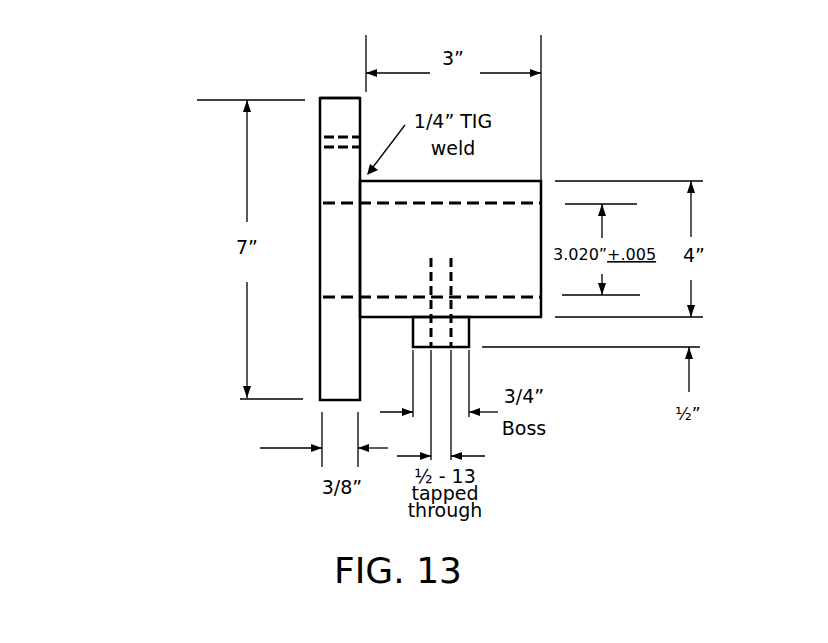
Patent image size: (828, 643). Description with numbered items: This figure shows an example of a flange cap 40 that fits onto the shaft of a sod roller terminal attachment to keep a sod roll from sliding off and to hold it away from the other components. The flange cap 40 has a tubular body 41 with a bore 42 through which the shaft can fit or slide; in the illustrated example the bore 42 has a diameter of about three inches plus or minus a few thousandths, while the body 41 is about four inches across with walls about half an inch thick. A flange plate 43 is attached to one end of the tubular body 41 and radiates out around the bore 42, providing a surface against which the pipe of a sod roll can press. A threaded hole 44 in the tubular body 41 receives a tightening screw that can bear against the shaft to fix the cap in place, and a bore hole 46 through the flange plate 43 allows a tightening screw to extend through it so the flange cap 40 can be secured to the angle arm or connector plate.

The flange cap 40 is at (182, 211).
The tubular body 41 is at (510, 181).
The bore 42 is at (312, 254).
The flange plate 43 is at (321, 97).
The threaded hole 44 is at (440, 277).
The bore hole 46 is at (310, 143).